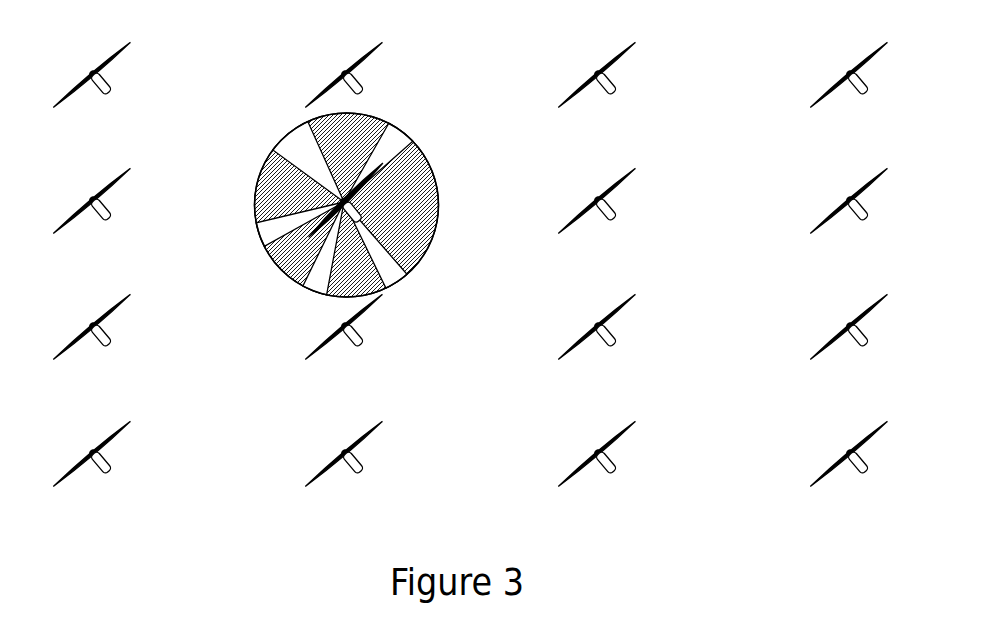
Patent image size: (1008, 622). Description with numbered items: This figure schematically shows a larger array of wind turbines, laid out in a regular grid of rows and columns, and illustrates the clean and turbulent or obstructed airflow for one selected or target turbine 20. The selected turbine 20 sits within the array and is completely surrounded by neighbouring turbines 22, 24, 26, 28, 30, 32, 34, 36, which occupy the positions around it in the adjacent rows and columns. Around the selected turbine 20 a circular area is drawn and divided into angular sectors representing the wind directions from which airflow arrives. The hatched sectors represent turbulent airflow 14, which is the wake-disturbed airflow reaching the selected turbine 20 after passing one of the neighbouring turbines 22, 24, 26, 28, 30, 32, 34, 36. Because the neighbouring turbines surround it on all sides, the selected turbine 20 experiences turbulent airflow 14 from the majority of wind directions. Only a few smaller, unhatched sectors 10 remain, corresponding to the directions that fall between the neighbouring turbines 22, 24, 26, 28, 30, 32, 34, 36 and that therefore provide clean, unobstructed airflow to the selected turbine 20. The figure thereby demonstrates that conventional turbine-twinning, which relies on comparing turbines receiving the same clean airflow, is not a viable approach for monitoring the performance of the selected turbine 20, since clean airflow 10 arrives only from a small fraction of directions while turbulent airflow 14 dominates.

The clean airflow sectors 10 is at (346, 204).
The turbulent airflow 14 is at (395, 187).
The selected turbine 20 is at (362, 212).
The neighbouring turbine 22 is at (100, 80).
The neighbouring turbine 24 is at (368, 92).
The neighbouring turbine 26 is at (618, 94).
The neighbouring turbine 28 is at (107, 222).
The neighbouring turbine 30 is at (607, 205).
The neighbouring turbine 32 is at (100, 342).
The neighbouring turbine 34 is at (363, 349).
The neighbouring turbine 36 is at (624, 348).